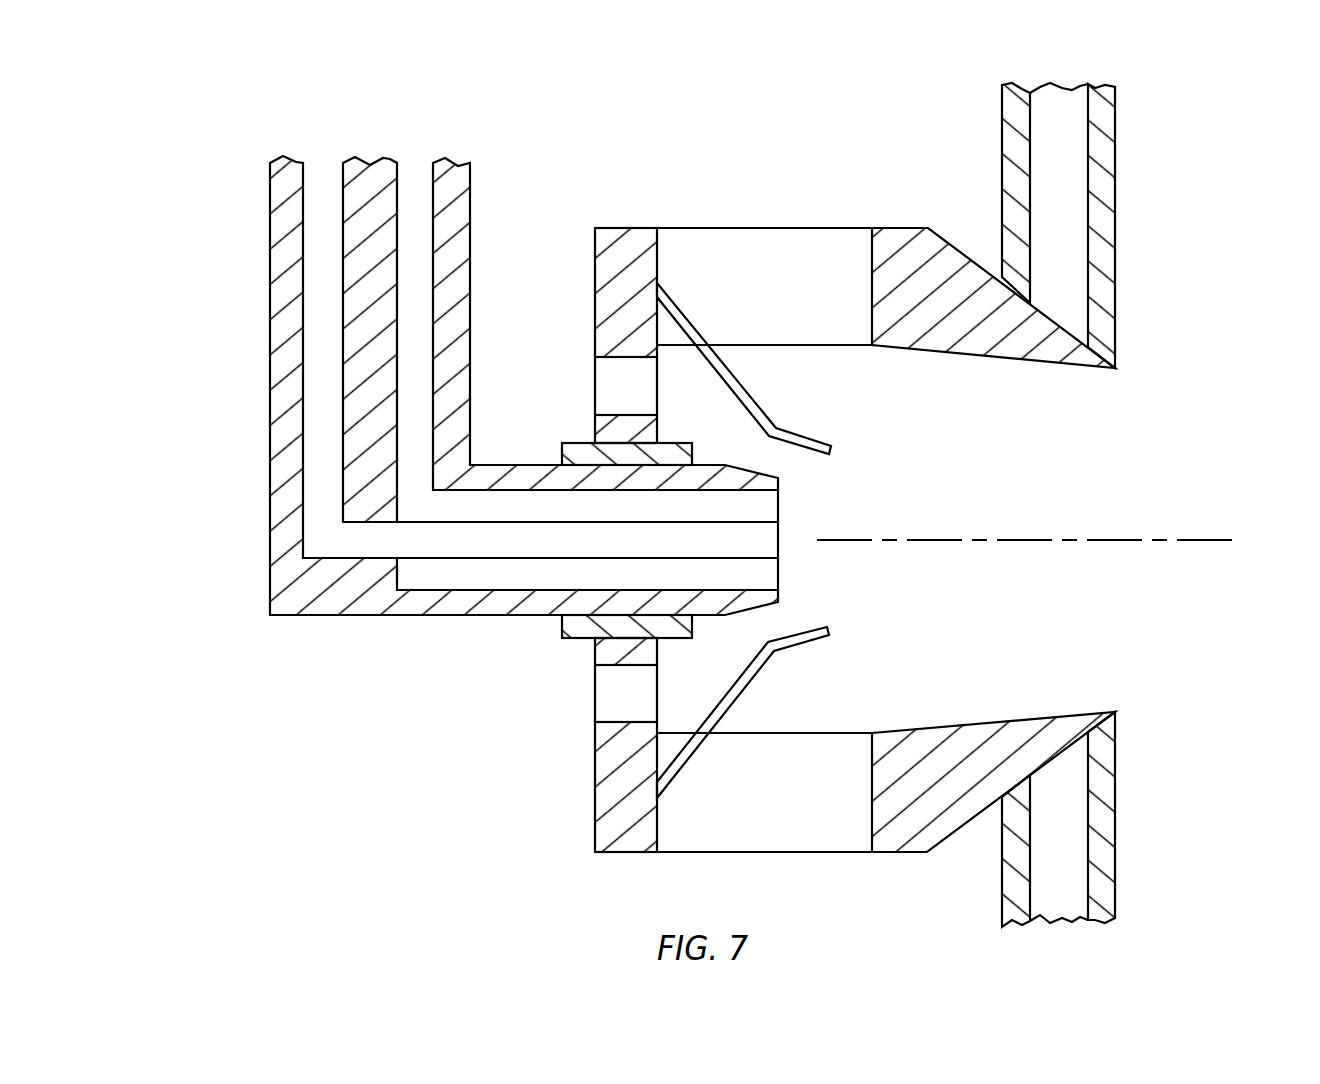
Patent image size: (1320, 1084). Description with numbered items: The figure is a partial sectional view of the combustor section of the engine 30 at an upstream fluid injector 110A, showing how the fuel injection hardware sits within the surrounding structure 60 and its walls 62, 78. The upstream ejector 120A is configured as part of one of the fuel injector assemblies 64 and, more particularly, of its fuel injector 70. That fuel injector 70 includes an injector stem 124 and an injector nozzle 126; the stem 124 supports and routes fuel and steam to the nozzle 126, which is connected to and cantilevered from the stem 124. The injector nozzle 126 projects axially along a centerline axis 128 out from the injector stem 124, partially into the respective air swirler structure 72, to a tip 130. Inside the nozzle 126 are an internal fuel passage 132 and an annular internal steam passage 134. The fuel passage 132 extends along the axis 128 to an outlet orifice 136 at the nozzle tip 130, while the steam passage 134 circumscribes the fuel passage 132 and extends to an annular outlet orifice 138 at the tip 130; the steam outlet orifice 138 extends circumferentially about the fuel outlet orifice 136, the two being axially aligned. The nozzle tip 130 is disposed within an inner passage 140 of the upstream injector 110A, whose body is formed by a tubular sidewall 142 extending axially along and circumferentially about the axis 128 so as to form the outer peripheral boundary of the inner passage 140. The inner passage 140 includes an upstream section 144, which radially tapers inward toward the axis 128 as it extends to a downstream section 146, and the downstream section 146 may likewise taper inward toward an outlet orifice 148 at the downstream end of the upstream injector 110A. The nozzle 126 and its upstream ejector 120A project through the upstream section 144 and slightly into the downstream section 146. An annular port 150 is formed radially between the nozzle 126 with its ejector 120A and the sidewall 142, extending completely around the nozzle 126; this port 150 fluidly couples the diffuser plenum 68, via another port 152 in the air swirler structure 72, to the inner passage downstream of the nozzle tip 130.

The gas turbine engine assembly 30 is at (228, 108).
The fuel injector assembly 64 is at (208, 185).
The injector stem 124 is at (257, 277).
The fuel injector 70 is at (262, 655).
The diffuser plenum 68 is at (293, 829).
The upstream ejector 120A is at (426, 643).
The injector nozzle 126 is at (524, 385).
The internal steam passage 134 is at (508, 503).
The tip 130 is at (780, 483).
The outlet orifice 138 is at (780, 507).
The internal fuel passage 132 is at (565, 551).
The outlet orifice 136 is at (780, 543).
The downstream section 146 is at (812, 472).
The outlet orifice 148 is at (825, 462).
The upstream section 144 is at (717, 420).
The port 150 is at (658, 376).
The port 152 is at (617, 403).
The air swirler structure 72 is at (893, 195).
The aft region 60 is at (1227, 292).
The wall 62 is at (1145, 117).
The liner wall 78 is at (1058, 505).
The tubular sidewall 142 is at (748, 393).
The inner passage 140 is at (809, 621).
The upstream fluid injector 110A is at (818, 656).
The centerline axis 128 is at (1225, 545).